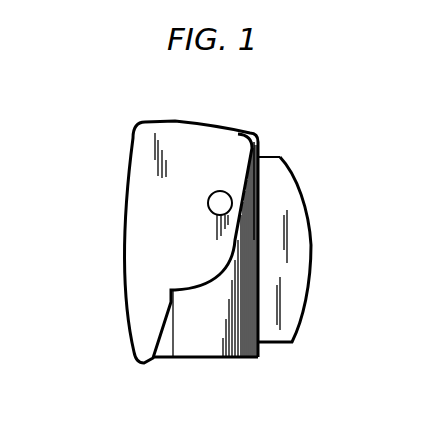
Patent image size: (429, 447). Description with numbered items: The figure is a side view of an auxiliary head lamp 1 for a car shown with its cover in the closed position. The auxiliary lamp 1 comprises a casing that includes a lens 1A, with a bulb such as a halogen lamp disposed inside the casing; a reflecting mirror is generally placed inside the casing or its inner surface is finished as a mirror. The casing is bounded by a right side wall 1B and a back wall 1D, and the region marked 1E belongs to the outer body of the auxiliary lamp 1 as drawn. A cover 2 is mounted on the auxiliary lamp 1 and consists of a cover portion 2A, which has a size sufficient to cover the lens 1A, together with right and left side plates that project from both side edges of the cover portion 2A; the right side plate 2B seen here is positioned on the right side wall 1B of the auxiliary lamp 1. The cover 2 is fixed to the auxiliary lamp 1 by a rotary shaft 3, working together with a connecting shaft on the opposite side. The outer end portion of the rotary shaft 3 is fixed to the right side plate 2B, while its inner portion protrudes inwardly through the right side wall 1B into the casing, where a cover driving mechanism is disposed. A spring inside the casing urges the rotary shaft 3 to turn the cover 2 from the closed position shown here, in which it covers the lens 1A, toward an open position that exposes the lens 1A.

The auxiliary head lamp 1 is at (290, 162).
The lens 1A is at (165, 342).
The right side wall 1B is at (250, 187).
The back wall 1D is at (262, 215).
The curved wall 1E is at (295, 244).
The cover 2 is at (120, 183).
The cover portion 2A is at (122, 277).
The right side plate 2B is at (185, 173).
The rotary shaft 3 is at (218, 208).